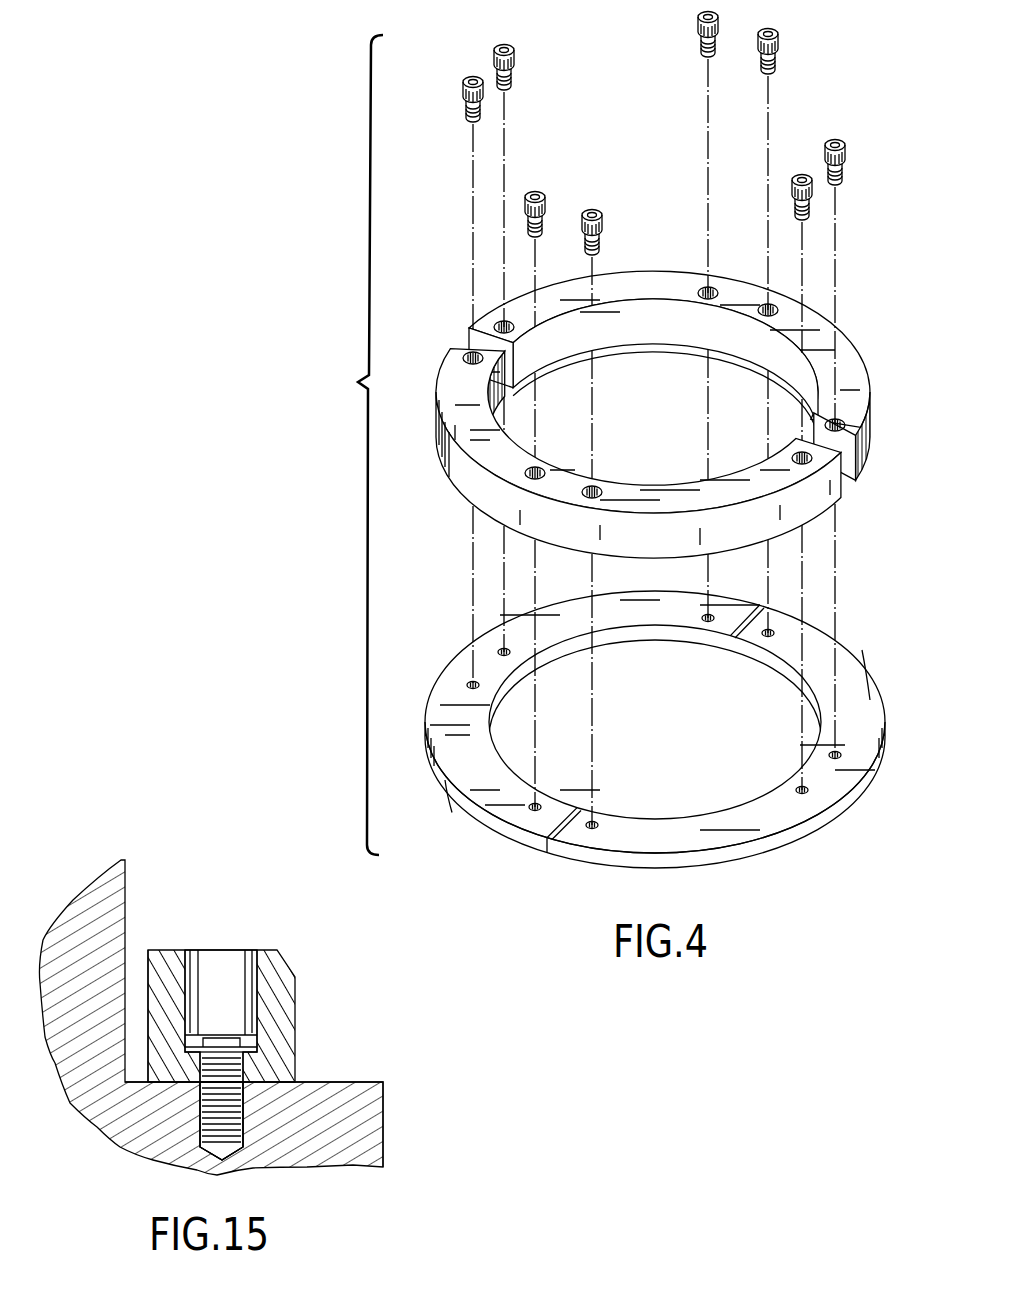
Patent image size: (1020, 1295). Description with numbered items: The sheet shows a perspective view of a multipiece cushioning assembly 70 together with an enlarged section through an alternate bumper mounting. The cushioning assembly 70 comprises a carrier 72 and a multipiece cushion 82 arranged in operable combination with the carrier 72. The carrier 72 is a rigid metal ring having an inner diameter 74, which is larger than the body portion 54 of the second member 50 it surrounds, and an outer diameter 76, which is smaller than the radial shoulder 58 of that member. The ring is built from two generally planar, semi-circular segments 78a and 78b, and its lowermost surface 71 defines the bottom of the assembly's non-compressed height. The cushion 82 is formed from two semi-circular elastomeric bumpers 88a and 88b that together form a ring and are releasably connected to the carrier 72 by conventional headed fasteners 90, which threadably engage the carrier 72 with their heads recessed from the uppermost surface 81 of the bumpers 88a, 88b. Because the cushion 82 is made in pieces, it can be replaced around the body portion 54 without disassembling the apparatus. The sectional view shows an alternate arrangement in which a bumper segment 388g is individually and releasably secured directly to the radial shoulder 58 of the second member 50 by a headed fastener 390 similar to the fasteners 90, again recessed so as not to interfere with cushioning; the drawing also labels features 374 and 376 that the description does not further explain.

In FIG. 4, the headed fastener 90 is at (760, 67).
In FIG. 4, the elastomeric bumper 88b is at (687, 355).
In FIG. 4, the elastomeric bumper 88a is at (465, 450).
In FIG. 4, the multipiece cushion 82 is at (654, 394).
In FIG. 4, the uppermost surface 81 is at (852, 402).
In FIG. 4, the cushioning assembly 70 is at (355, 445).
In FIG. 4, the outer diameter 76 is at (847, 647).
In FIG. 4, the carrier segment 78a is at (490, 798).
In FIG. 4, the carrier segment 78b is at (752, 832).
In FIG. 4, the inner diameter 74 is at (659, 813).
In FIG. 4, the lowermost surface 71 is at (840, 813).
In FIG. 4, the carrier 72 is at (659, 752).
In FIG. 15, the body portion 54 is at (104, 889).
In FIG. 15, the second member 50 is at (240, 1008).
In FIG. 15, the gap 374 is at (140, 977).
In FIG. 15, the bumper segment 388g is at (283, 1002).
In FIG. 15, the socket head bolt 376 is at (297, 1047).
In FIG. 15, the radial shoulder 58 is at (377, 1120).
In FIG. 15, the headed fastener 390 is at (233, 1125).